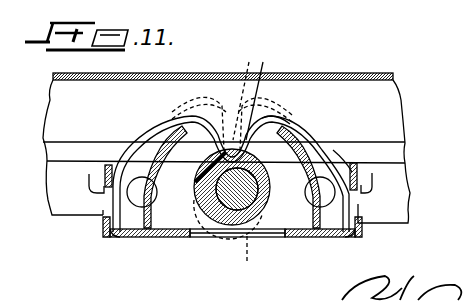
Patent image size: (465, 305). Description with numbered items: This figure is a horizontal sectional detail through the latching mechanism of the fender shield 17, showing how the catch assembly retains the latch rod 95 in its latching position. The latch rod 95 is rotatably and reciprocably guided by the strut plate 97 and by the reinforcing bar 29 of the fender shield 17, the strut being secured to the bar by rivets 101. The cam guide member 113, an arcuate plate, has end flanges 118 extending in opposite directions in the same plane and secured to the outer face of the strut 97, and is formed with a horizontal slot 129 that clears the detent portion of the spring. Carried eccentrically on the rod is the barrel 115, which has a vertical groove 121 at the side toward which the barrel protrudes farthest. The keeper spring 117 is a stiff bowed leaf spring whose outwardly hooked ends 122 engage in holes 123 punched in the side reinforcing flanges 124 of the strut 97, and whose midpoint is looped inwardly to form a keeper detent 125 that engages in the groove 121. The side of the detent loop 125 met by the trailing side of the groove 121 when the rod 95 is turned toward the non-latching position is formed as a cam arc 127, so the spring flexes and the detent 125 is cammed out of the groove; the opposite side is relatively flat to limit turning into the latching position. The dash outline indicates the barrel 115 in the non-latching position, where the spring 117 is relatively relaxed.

The fender shield 17 is at (359, 74).
The reinforcing bar 29 is at (409, 210).
The latch rod 95 is at (231, 203).
The strut plate 97 is at (300, 238).
The rivets 101 is at (108, 236).
The cam guide member 113 is at (159, 148).
The barrel 115 is at (267, 206).
The keeper spring 117 is at (337, 150).
The end flanges 118 is at (136, 237).
The vertical groove 121 is at (194, 184).
The outwardly hooked ends 122 is at (358, 196).
The holes 123 is at (356, 190).
The side reinforcing flanges 124 is at (106, 178).
The keeper detent 125 is at (238, 150).
The cam arc 127 is at (223, 135).
The horizontal slot 129 is at (264, 112).